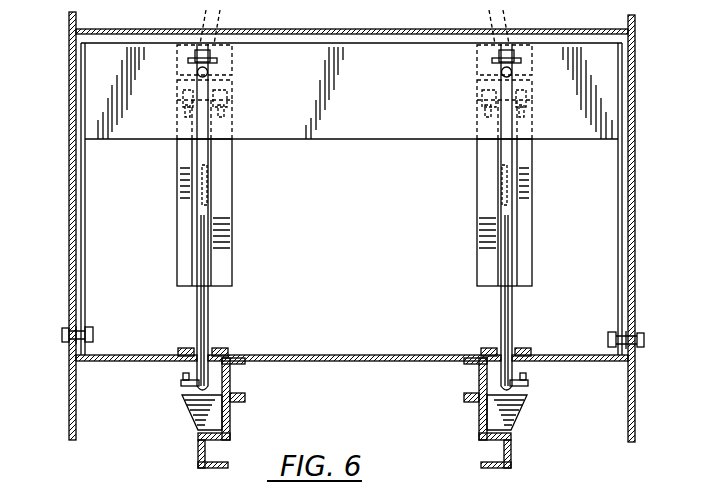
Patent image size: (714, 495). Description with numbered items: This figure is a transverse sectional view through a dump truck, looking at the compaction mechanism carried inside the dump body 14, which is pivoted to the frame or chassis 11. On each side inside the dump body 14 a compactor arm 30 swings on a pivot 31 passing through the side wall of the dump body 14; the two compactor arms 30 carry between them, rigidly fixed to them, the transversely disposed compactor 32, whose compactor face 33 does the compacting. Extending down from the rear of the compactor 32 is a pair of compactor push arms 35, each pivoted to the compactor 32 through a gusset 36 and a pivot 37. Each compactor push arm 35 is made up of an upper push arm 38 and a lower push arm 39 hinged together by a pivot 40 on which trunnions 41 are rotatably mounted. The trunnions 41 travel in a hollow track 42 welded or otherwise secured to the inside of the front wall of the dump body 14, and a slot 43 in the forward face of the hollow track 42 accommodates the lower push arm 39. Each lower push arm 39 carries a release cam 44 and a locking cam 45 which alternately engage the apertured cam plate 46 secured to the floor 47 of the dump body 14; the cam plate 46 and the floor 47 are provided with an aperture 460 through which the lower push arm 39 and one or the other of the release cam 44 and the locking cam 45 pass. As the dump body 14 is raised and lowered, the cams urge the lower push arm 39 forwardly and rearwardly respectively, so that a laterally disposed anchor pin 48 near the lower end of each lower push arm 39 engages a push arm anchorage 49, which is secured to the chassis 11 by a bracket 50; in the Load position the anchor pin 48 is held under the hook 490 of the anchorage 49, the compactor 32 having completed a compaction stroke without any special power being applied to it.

The frame or chassis 11 is at (199, 455).
The dump body 14 is at (636, 190).
The compactor arm 30 is at (83, 272).
The pivot 31 is at (63, 337).
The compactor 32 is at (348, 120).
The compactor face 33 is at (298, 132).
The compactor push arm 35 is at (210, 303).
The gusset 36 is at (206, 30).
The pivot 37 is at (232, 60).
The upper push arm 38 is at (232, 88).
The lower push arm 39 is at (200, 152).
The pivot 40 is at (183, 98).
The trunnion 41 is at (185, 112).
The hollow track 42 is at (226, 240).
The slot 43 is at (213, 192).
The release cam 44 is at (216, 178).
The locking cam 45 is at (206, 326).
The apertured cam plate 46 is at (222, 352).
The floor 47 is at (318, 356).
The anchor pin 48 is at (181, 383).
The push arm anchorage 49 is at (184, 400).
The bracket 50 is at (200, 416).
The aperture 460 is at (190, 348).
The hook 490 is at (184, 374).